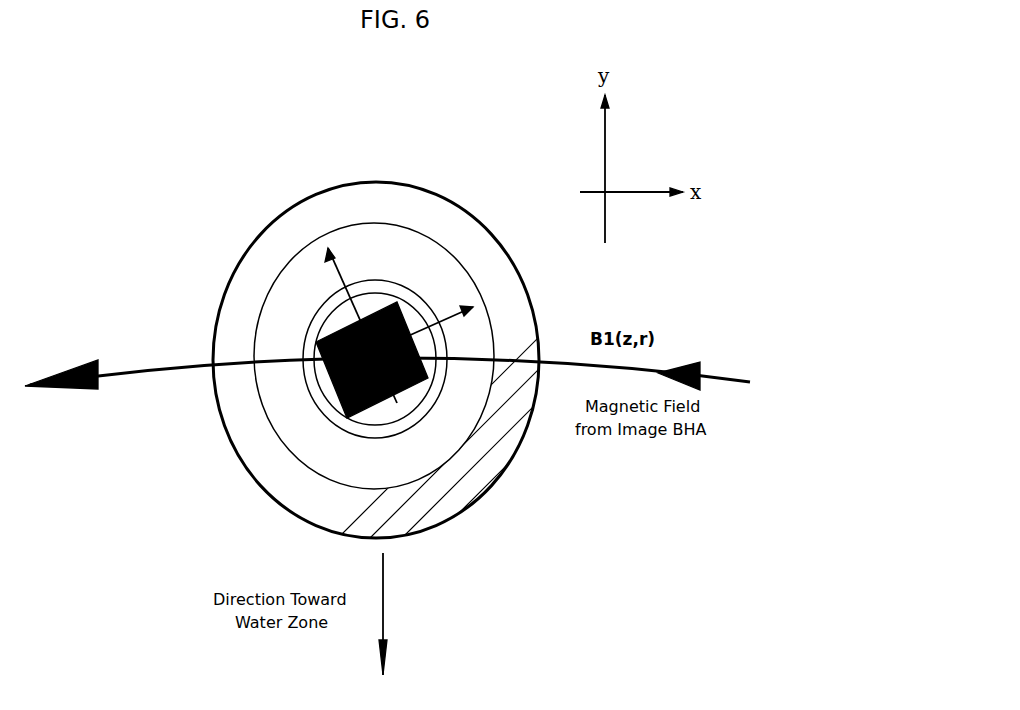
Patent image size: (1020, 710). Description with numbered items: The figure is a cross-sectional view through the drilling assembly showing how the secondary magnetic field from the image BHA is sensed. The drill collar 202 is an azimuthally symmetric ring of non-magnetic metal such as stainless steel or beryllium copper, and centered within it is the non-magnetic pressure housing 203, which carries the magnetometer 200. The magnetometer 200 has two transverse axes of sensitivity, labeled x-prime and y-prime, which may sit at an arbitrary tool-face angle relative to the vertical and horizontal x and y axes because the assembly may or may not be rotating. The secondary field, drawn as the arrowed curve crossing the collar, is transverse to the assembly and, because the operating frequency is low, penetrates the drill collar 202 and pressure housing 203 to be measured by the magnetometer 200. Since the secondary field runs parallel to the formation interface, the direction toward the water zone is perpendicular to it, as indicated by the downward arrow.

The drill collar 202 is at (247, 247).
The pressure housing 203 is at (417, 430).
The magnetometer 200 is at (340, 398).